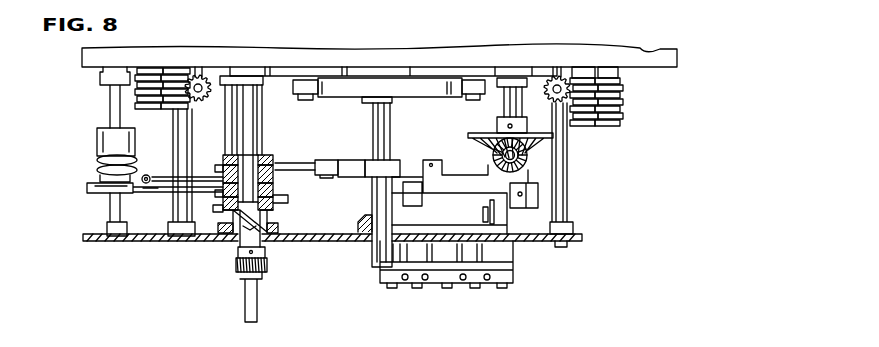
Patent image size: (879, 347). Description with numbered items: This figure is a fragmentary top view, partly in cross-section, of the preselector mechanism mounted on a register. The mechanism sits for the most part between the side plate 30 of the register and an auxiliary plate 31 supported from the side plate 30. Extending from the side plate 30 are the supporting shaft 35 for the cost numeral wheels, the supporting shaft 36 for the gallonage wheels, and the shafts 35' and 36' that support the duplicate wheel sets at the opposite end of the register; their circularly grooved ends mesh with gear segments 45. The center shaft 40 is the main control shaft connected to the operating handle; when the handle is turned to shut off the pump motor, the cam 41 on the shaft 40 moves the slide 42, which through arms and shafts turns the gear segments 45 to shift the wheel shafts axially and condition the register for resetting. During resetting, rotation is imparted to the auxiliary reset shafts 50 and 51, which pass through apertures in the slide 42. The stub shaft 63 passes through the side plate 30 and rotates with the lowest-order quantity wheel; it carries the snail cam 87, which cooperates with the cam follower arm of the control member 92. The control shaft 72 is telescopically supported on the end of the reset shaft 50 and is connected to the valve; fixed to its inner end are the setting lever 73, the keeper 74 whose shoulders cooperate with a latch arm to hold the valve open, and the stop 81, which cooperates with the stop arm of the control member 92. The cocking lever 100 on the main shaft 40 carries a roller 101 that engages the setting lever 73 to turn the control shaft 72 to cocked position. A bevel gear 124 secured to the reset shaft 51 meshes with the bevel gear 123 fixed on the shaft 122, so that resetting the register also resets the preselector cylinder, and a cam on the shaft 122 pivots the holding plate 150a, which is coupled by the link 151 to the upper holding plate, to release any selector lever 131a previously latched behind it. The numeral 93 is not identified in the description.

The side plate 30 is at (84, 53).
The auxiliary plate 31 is at (85, 238).
The supporting shaft 35 is at (178, 130).
The supporting shaft 36 is at (149, 67).
The shaft 35' is at (587, 75).
The shaft 36' is at (619, 75).
The gear segment 45 is at (203, 74).
The slide 42 is at (278, 75).
The cam 41 is at (368, 83).
The center shaft 40 is at (389, 127).
The auxiliary reset shaft 50 is at (260, 111).
The auxiliary reset shaft 51 is at (511, 87).
The stub shaft 63 is at (110, 113).
The setting lever 73 is at (282, 160).
The keeper 74 is at (278, 210).
The control shaft 72 is at (245, 296).
The stop 81 is at (289, 202).
The snail cam 87 is at (88, 188).
The control member 92 is at (152, 197).
The pin 93 is at (163, 168).
The cocking lever 100 is at (347, 160).
The roller 101 is at (323, 160).
The shaft 122 is at (530, 155).
The bevel gear 123 is at (497, 155).
The bevel gear 124 is at (478, 133).
The holding plate 150a is at (410, 212).
The link 151 is at (500, 207).
The selector lever 131a is at (453, 253).